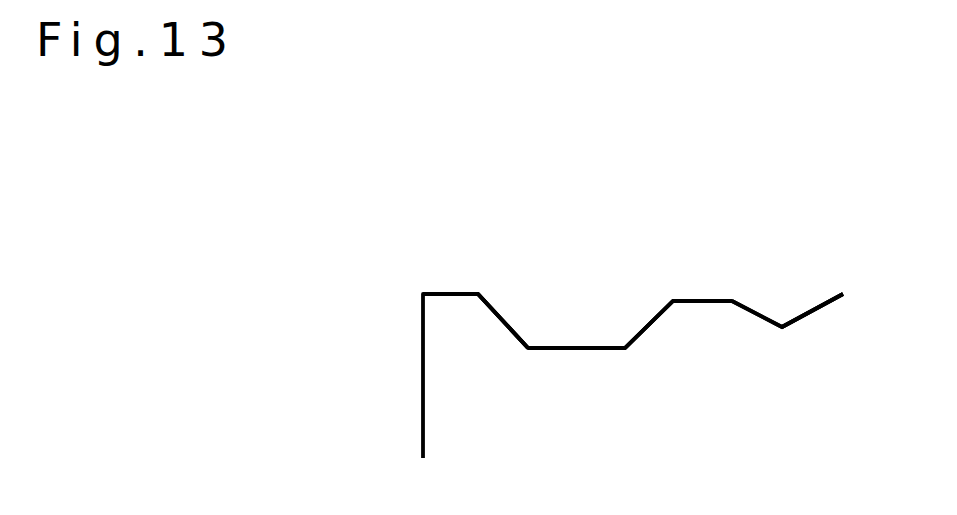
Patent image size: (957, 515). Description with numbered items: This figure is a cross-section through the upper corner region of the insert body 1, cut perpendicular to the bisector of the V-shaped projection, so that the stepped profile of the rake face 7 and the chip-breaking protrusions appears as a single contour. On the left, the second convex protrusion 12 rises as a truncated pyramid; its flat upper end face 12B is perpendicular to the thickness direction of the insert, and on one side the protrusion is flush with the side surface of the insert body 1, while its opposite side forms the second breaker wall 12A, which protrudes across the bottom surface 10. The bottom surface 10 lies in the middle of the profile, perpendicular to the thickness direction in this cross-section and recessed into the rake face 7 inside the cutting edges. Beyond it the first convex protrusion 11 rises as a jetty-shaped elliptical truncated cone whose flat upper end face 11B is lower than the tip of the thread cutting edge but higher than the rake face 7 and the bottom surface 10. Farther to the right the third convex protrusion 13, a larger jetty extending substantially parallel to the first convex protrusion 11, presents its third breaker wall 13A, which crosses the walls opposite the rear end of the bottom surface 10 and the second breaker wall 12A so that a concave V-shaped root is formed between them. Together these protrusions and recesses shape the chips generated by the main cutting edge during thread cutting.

The insert body 1 is at (598, 441).
The rake face 7 is at (610, 254).
The bottom surface 10 is at (571, 348).
The first convex protrusion 11 is at (677, 291).
The upper end face of the first convex protrusion 11B is at (698, 302).
The second convex protrusion 12 is at (538, 160).
The second breaker wall 12A is at (507, 320).
The upper end face of the second convex protrusion 12B is at (450, 294).
The third convex protrusion 13 is at (802, 297).
The third breaker wall 13A is at (828, 296).